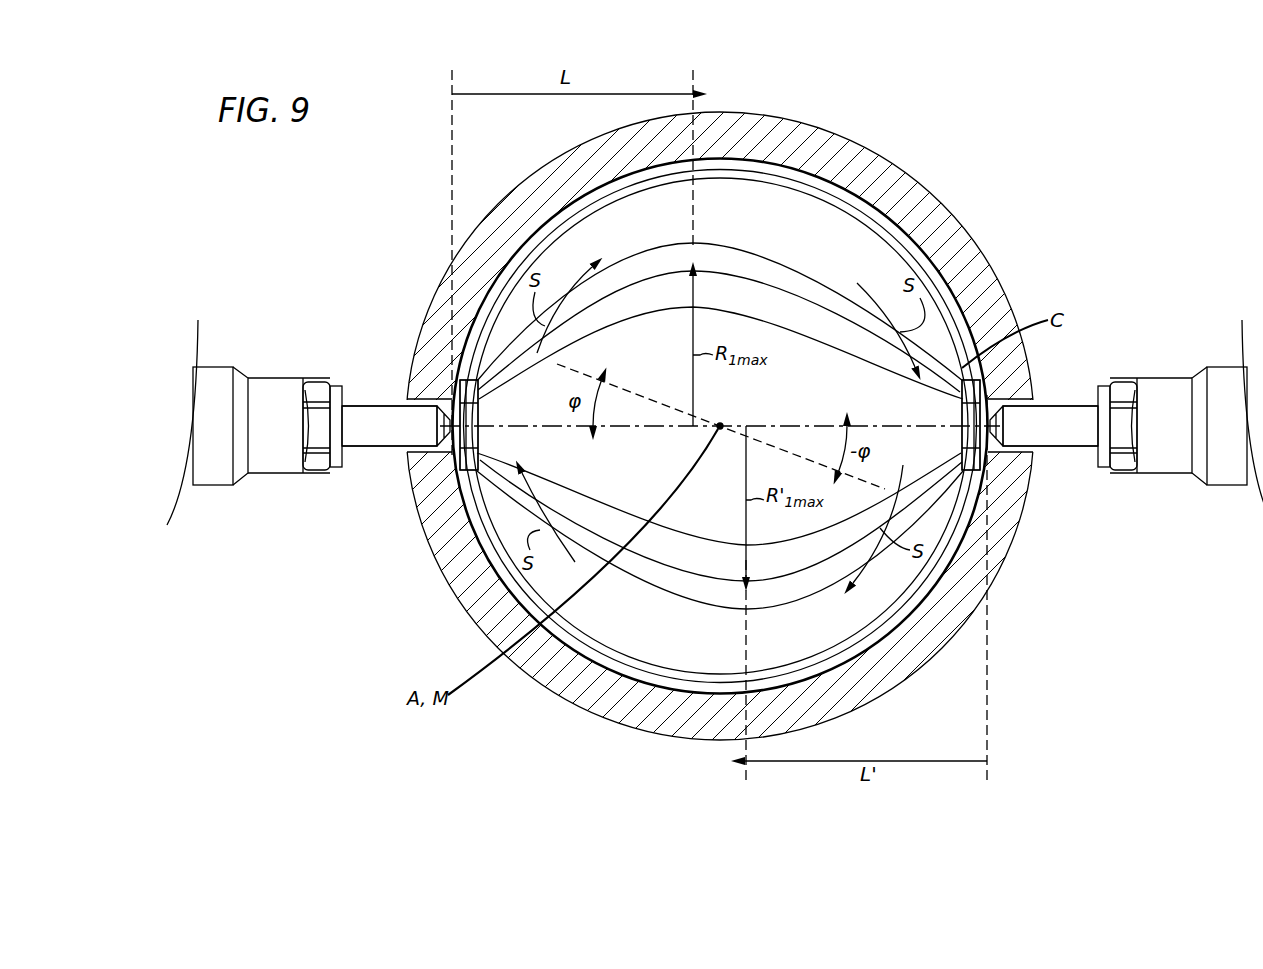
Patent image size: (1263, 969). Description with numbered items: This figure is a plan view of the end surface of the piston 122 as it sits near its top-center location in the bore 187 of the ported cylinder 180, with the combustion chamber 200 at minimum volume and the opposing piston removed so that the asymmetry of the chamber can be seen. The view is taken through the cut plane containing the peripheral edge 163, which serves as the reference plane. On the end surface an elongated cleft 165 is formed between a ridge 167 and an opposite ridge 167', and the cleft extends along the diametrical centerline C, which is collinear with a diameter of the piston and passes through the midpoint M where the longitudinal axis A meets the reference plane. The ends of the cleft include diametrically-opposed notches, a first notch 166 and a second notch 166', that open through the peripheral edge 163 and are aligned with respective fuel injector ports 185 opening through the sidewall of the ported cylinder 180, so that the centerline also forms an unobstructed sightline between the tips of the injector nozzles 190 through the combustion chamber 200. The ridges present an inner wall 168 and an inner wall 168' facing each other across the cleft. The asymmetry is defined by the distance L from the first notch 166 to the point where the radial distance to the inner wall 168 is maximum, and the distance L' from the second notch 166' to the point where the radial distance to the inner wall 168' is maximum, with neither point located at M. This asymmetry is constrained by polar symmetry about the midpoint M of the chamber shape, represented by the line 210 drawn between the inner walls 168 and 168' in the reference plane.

The piston 122 is at (950, 308).
The peripheral edge 163 is at (928, 253).
The elongated cleft 165 is at (771, 611).
The first notch 166 is at (410, 458).
The second notch 166' is at (1042, 405).
The ridge 167 is at (720, 227).
The opposite ridge 167' is at (720, 607).
The inner wall 168 is at (719, 246).
The inner wall of opposite ridge 168' is at (721, 614).
The ported cylinder 180 is at (887, 160).
The fuel injector port 185 is at (442, 448).
The bore 187 is at (890, 213).
The injector nozzle 190 is at (437, 428).
The combustion chamber 200 is at (665, 236).
The line between inner walls 210 is at (703, 420).